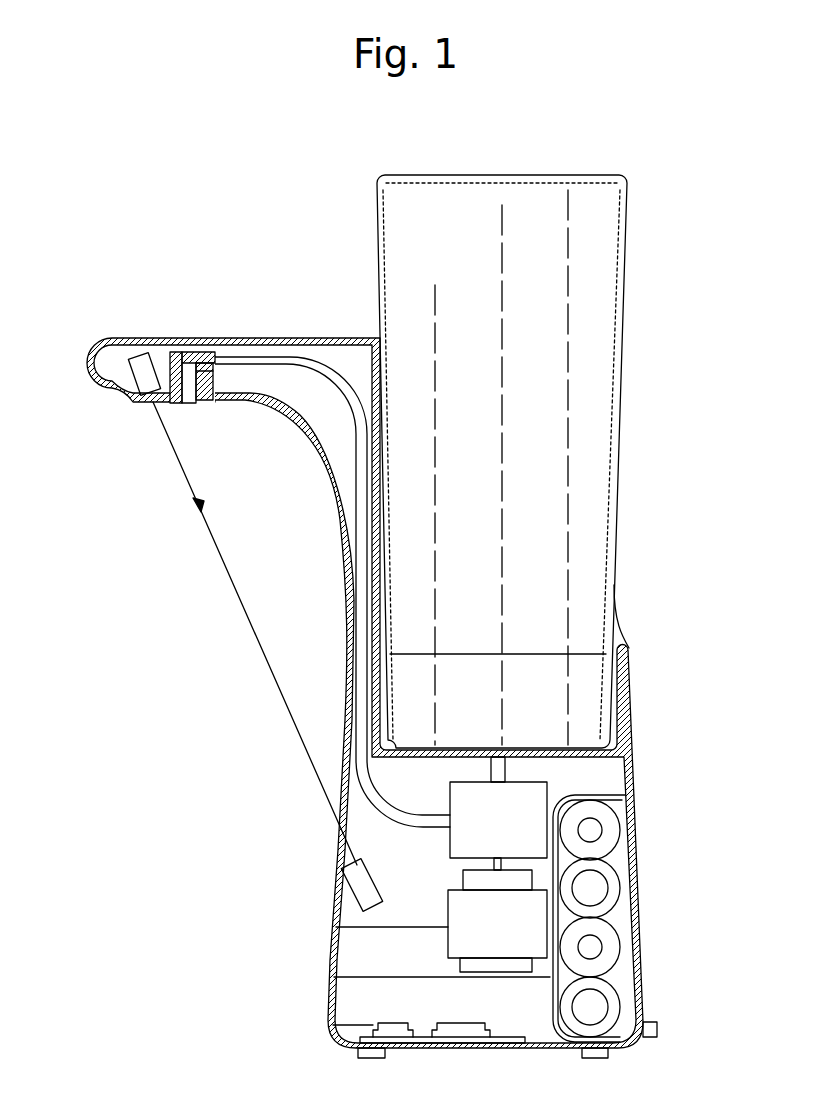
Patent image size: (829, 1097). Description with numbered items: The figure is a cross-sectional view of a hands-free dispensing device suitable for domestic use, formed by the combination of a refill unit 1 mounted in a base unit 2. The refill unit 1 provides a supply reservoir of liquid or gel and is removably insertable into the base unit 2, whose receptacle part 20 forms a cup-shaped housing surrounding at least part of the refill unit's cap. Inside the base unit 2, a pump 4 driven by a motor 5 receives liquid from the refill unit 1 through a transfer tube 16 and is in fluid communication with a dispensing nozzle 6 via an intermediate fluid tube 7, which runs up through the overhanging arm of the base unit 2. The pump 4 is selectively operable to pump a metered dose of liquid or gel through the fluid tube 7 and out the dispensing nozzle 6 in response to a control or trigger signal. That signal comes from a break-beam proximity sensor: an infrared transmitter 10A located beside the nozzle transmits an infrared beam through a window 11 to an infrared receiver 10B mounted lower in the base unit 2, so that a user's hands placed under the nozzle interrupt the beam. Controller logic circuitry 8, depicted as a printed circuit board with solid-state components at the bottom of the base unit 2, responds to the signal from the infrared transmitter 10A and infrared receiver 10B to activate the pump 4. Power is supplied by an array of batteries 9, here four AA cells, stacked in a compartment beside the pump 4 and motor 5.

The refill unit 1 is at (660, 224).
The base unit 2 is at (645, 708).
The receptacle part 20 is at (613, 537).
The fluid tube 7 is at (353, 453).
The dispensing nozzle 6 is at (193, 405).
The infrared transmitter 10A is at (137, 373).
The infrared receiver 10B is at (365, 893).
The window 11 is at (333, 850).
The transfer tube 16 is at (487, 773).
The pump 4 is at (498, 830).
The motor 5 is at (473, 920).
The batteries 9 is at (618, 917).
The controller logic circuitry 8 is at (357, 1037).